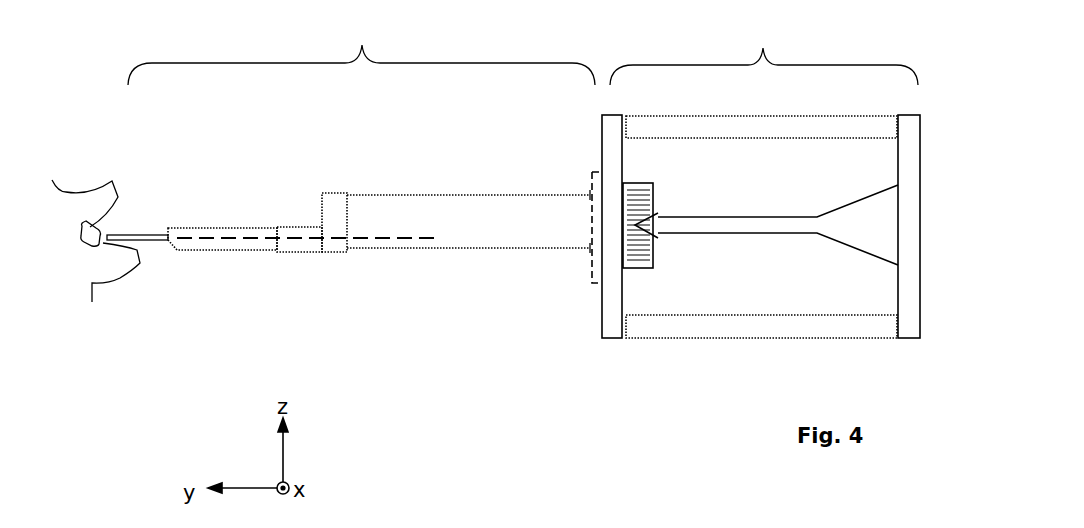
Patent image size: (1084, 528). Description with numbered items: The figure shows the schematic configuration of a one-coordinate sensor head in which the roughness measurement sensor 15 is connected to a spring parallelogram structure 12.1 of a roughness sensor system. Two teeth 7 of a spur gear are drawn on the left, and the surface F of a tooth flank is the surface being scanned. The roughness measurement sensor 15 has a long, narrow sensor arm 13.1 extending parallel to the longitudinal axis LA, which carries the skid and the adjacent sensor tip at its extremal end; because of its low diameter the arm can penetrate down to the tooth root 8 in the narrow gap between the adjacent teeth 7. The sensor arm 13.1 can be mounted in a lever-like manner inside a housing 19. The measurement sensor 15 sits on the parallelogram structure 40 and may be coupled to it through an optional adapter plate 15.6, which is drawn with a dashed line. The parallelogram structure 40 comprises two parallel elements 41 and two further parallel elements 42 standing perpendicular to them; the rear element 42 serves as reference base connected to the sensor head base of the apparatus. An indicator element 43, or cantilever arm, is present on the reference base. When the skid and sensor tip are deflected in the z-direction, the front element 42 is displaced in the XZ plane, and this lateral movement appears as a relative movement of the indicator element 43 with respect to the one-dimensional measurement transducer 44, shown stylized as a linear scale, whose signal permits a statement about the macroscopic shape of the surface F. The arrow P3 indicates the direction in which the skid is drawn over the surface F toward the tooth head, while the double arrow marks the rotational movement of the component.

The tooth 7 is at (92, 193).
The tooth root 8 is at (81, 236).
The parallelogram structure 12.1 is at (764, 53).
The sensor arm 13.1 is at (155, 242).
The roughness measurement sensor 15 is at (361, 52).
The adapter plate 15.6 is at (595, 172).
The housing 19 is at (498, 203).
The parallelogram structure 40 is at (829, 100).
The parallel elements 41 is at (698, 120).
The parallel elements 42 is at (607, 322).
The indicator element 43 is at (770, 218).
The measurement transducer 44 is at (652, 182).
The surface F is at (95, 227).
The longitudinal axis LA is at (367, 240).
The arrow P3 is at (400, 355).